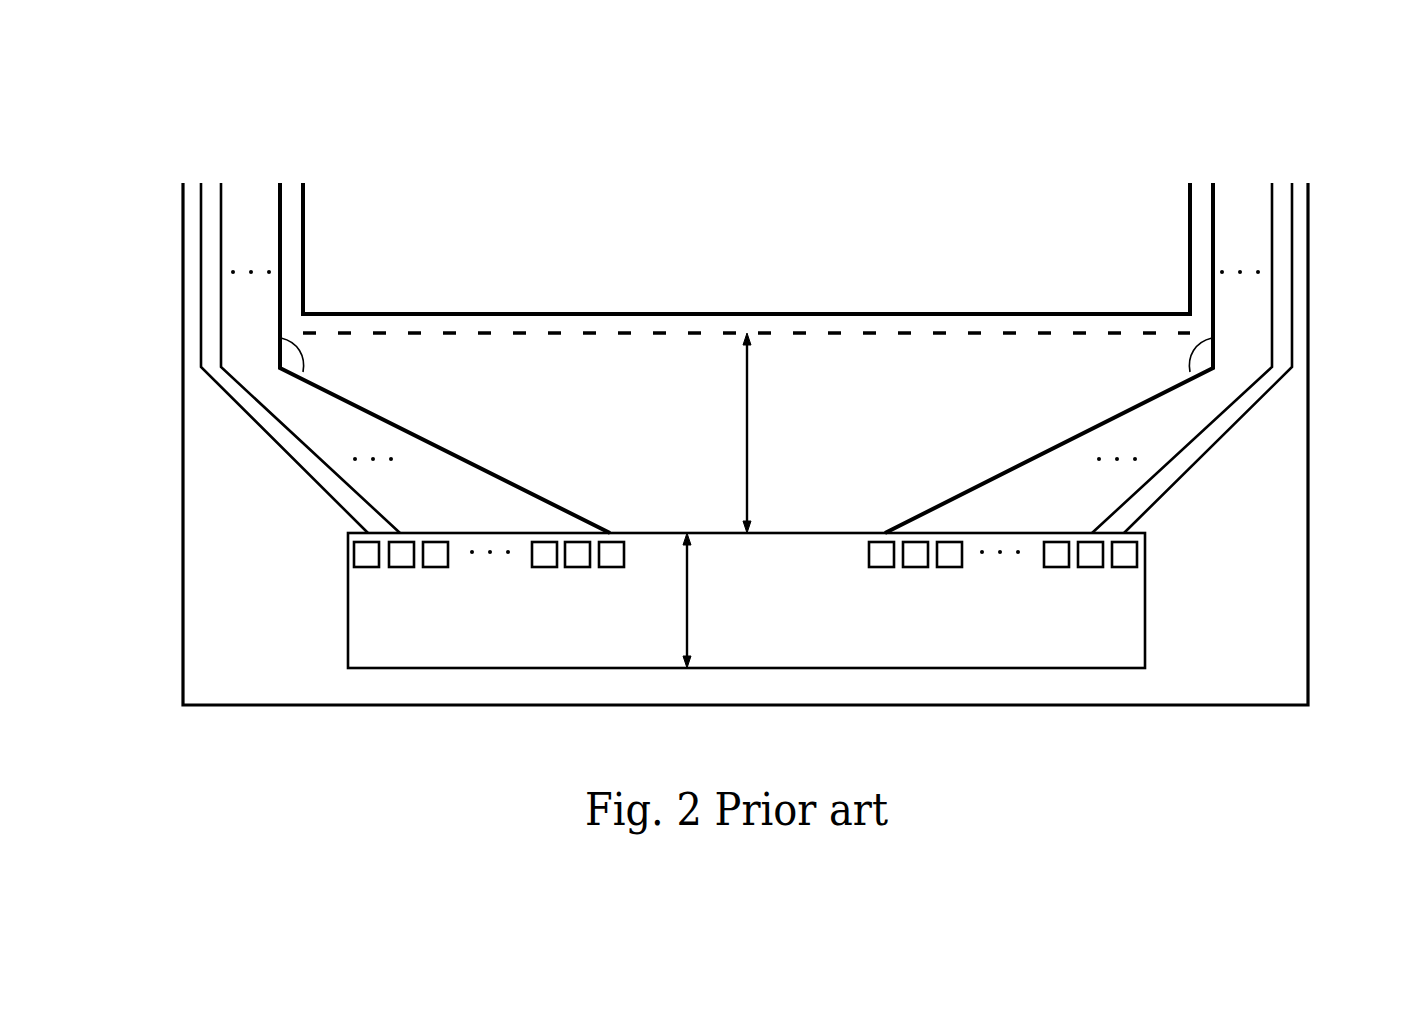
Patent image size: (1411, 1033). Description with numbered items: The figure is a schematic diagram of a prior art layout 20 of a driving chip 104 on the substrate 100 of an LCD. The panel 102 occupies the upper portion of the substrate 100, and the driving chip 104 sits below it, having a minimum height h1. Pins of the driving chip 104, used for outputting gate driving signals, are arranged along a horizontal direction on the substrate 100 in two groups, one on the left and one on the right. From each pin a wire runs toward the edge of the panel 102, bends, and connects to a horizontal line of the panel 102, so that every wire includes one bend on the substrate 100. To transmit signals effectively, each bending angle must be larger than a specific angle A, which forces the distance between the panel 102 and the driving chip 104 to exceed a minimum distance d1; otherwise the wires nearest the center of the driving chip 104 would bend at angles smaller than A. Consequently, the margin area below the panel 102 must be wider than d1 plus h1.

The touch sensing device (prior art) 20 is at (1211, 118).
The substrate 100 is at (200, 492).
The panel 102 is at (752, 223).
The driving chip 104 is at (348, 612).
The angle A is at (303, 364).
The minimum distance d1 is at (748, 407).
The minimum height h1 is at (690, 600).